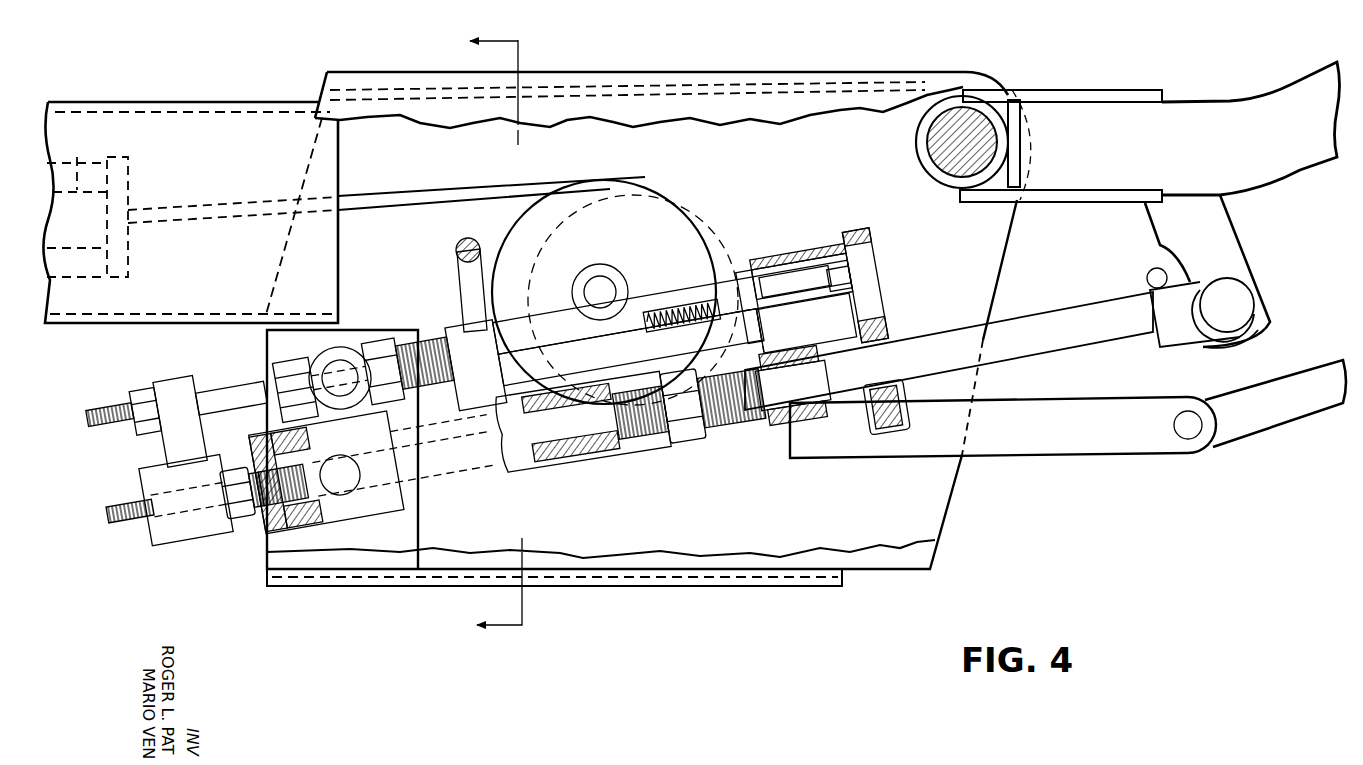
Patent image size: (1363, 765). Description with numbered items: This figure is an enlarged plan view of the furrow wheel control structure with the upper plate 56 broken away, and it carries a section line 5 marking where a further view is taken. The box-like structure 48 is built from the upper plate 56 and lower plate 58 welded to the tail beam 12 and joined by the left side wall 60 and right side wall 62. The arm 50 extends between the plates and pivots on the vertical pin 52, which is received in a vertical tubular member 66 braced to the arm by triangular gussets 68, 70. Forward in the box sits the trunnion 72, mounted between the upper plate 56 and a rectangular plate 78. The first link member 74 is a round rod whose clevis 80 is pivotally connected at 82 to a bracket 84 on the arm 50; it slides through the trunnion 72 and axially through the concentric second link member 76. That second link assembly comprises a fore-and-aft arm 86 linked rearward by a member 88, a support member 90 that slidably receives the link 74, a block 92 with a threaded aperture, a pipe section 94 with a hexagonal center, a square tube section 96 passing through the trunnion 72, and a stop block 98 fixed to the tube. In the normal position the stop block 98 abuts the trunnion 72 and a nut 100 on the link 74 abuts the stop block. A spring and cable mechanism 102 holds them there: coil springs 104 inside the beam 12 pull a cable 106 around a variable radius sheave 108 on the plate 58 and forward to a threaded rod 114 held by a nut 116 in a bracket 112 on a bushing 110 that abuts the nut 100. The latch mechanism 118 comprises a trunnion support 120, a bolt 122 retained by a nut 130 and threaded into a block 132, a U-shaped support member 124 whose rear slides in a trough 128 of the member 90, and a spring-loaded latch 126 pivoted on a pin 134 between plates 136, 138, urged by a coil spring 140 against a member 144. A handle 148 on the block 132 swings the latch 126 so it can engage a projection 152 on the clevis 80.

The section line 5- 5 is at (492, 336).
The tail beam 12 is at (214, 118).
The box-like structure 48 is at (776, 603).
The arm 50 is at (1290, 85).
The vertical pin 52 is at (935, 158).
The upper plate 56 is at (790, 100).
The lower plate 58 is at (847, 122).
The left side wall 60 is at (400, 587).
The right side wall 62 is at (578, 88).
The vertical tubular member 66 is at (916, 148).
The triangular gusset 68 is at (1070, 202).
The triangular gusset 70 is at (1077, 91).
The trunnion 72 is at (373, 515).
The first link member 74 is at (1030, 328).
The second link member 76 is at (1068, 462).
The rectangular plate 78 is at (355, 328).
The clevis 80 is at (1180, 340).
The pivotal connection 82 is at (1240, 333).
The bracket 84 is at (1235, 243).
The fore-and-aft extending arm 86 is at (1003, 455).
The link member 88 is at (1277, 415).
The support member 90 is at (886, 330).
The block 92 is at (787, 430).
The pipe section 94 is at (647, 442).
The square tube section 96 is at (497, 478).
The stop block 98 is at (268, 527).
The nut 100 is at (230, 463).
The spring and cable mechanism 102 is at (183, 92).
The coil springs 104 is at (82, 162).
The cable 106 is at (394, 196).
The variable radius sheave 108 is at (707, 210).
The bushing 110 is at (192, 530).
The bracket 112 is at (165, 450).
The threaded rod 114 is at (100, 410).
The nut 116 is at (140, 400).
The latch mechanism 118 is at (782, 242).
The trunnion support 120 is at (324, 377).
The bolt 122 is at (435, 340).
The U-shaped latch support member 124 is at (692, 285).
The spring-loaded latch 126 is at (833, 285).
The trough 128 is at (880, 275).
The nut 130 is at (388, 336).
The block 132 is at (463, 390).
The pin 134 is at (743, 333).
The plate 136 is at (742, 283).
The plate 138 is at (748, 322).
The coil spring 140 is at (660, 300).
The member 144 is at (630, 347).
The handle 148 is at (478, 260).
The projection 152 is at (1150, 275).